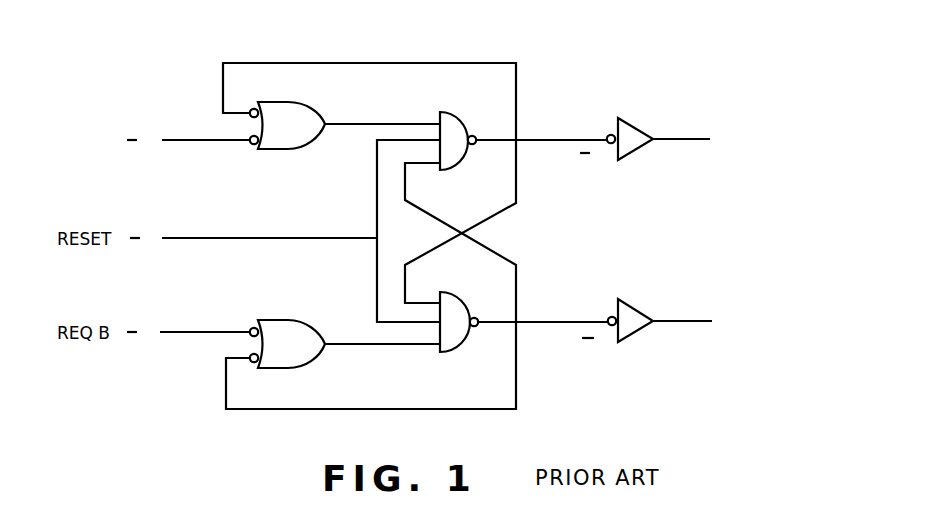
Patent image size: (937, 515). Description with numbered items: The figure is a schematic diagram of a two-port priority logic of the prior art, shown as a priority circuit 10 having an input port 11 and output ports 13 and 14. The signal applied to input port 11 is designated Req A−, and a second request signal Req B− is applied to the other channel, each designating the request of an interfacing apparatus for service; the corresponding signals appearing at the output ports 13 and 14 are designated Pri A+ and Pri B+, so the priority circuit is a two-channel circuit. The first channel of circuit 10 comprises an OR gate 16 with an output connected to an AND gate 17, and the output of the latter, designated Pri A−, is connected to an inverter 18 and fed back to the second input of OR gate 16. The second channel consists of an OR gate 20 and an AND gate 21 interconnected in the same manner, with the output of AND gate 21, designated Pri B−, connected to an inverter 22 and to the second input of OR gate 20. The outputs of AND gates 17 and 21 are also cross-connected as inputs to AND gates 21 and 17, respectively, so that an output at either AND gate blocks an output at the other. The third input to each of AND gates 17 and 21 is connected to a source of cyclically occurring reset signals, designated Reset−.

The priority circuit 10 is at (262, 52).
The input port 11 is at (169, 119).
The output port 13 is at (661, 108).
The output port 14 is at (708, 340).
The OR gate 16 is at (285, 101).
The AND gate 17 is at (447, 111).
The inverter 18 is at (628, 118).
The OR gate 20 is at (276, 319).
The AND gate 21 is at (462, 343).
The inverter 22 is at (645, 331).